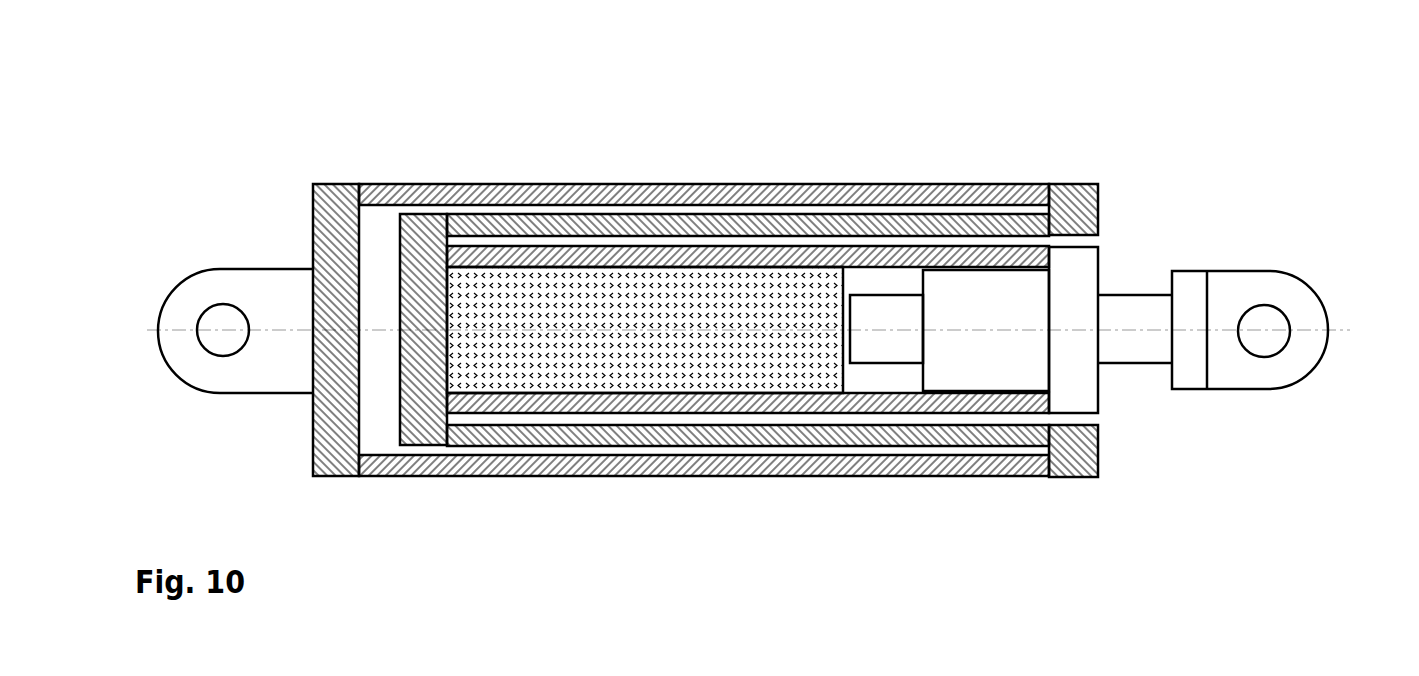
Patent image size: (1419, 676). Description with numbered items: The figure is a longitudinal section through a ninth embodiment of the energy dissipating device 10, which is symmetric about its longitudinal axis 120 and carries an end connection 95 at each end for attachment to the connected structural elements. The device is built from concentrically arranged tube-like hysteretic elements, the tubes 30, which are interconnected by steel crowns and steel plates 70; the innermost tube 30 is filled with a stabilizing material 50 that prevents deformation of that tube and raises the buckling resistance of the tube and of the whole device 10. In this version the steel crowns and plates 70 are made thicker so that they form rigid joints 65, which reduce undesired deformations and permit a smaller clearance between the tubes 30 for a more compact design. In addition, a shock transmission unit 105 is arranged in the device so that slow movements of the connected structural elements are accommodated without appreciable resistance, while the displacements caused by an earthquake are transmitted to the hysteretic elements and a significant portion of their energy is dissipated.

The energy dissipating device 10 is at (578, 135).
The tubes 30 is at (760, 192).
The stabilizing material 50 is at (735, 292).
The rigid joints 65 is at (311, 197).
The steel crowns and steel plates 70 is at (345, 192).
The end connections 95 is at (226, 336).
The shock transmission unit 105 is at (975, 318).
The longitudinal axis 120 is at (1342, 330).